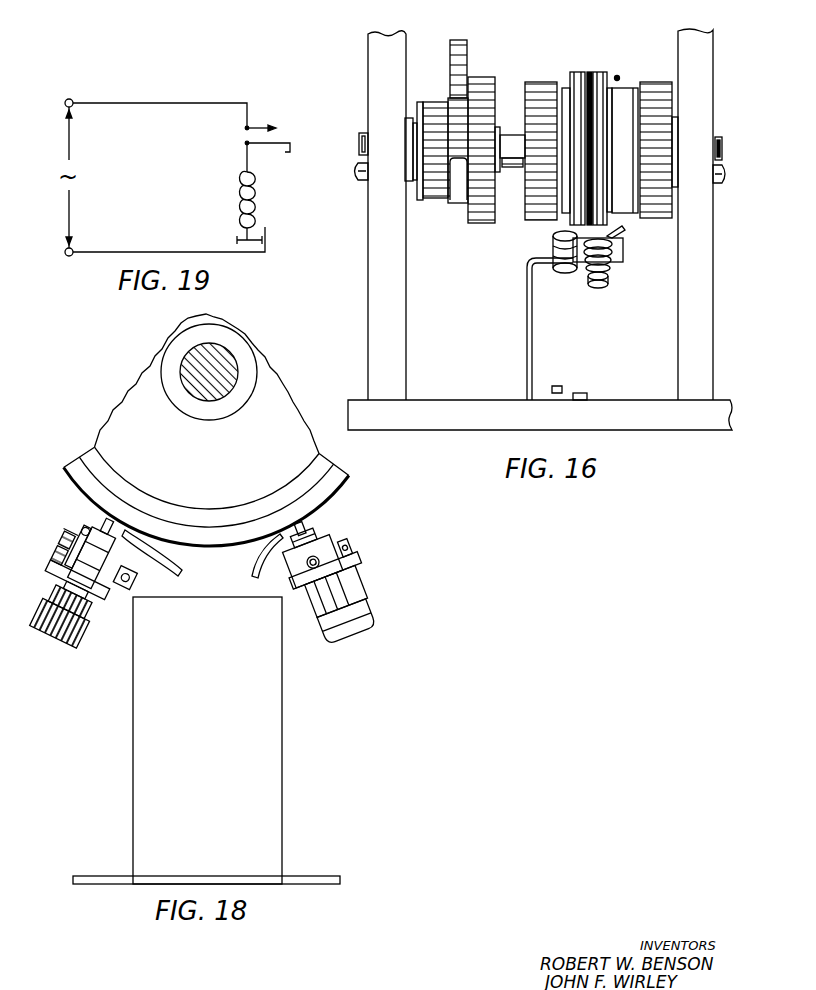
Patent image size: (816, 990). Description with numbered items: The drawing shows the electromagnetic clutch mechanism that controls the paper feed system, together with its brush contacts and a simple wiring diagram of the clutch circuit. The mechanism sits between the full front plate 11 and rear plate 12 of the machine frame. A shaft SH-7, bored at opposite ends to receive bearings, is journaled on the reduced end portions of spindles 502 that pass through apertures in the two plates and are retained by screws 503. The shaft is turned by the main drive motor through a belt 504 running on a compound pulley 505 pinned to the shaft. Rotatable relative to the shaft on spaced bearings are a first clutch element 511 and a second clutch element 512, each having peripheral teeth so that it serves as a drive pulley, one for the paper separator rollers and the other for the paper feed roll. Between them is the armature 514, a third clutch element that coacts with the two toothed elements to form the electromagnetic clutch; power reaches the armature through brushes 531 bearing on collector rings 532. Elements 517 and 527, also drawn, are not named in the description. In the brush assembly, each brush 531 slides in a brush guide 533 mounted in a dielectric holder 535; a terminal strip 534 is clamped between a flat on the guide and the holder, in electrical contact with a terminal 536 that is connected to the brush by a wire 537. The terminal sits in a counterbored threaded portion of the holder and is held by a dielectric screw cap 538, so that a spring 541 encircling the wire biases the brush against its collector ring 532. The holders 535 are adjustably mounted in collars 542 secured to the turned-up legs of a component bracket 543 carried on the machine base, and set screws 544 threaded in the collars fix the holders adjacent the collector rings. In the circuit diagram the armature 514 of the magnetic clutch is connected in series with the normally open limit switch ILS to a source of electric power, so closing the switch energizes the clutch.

In FIG. 16, the front plate 11 is at (677, 328).
In FIG. 16, the rear plate 12 is at (406, 328).
In FIG. 16, the spindle 502 is at (357, 140).
In FIG. 16, the screw 503 is at (356, 172).
In FIG. 16, the belt 504 is at (458, 40).
In FIG. 16, the compound pulley 505 is at (442, 200).
In FIG. 16, the first clutch element 511 is at (540, 82).
In FIG. 16, the second clutch element 512 is at (652, 82).
In FIG. 16, the armature 514 is at (617, 78).
In FIG. 19, the armature 514 is at (254, 198).
In FIG. 16, the clutch member 517 is at (630, 90).
In FIG. 16, the plate 527 is at (410, 118).
In FIG. 18, the brush 531 is at (110, 520).
In FIG. 16, the collector ring 532 is at (578, 72).
In FIG. 18, the collector ring 532 is at (336, 490).
In FIG. 18, the brush guide 533 is at (100, 533).
In FIG. 18, the terminal strip 534 is at (160, 566).
In FIG. 16, the holder 535 is at (612, 268).
In FIG. 18, the holder 535 is at (90, 633).
In FIG. 18, the terminal 536 is at (85, 615).
In FIG. 16, the wire 537 is at (553, 236).
In FIG. 18, the wire 537 is at (55, 588).
In FIG. 16, the screw cap 538 is at (598, 288).
In FIG. 18, the screw cap 538 is at (70, 645).
In FIG. 18, the spring 541 is at (62, 578).
In FIG. 16, the collar 542 is at (625, 232).
In FIG. 18, the collar 542 is at (128, 578).
In FIG. 16, the component bracket 543 is at (532, 360).
In FIG. 18, the component bracket 543 is at (283, 718).
In FIG. 18, the set screw 544 is at (62, 550).
In FIG. 16, the shaft SH-7 is at (508, 135).
In FIG. 18, the shaft SH-7 is at (230, 362).
In FIG. 19, the normally open limit switch ILS is at (277, 140).